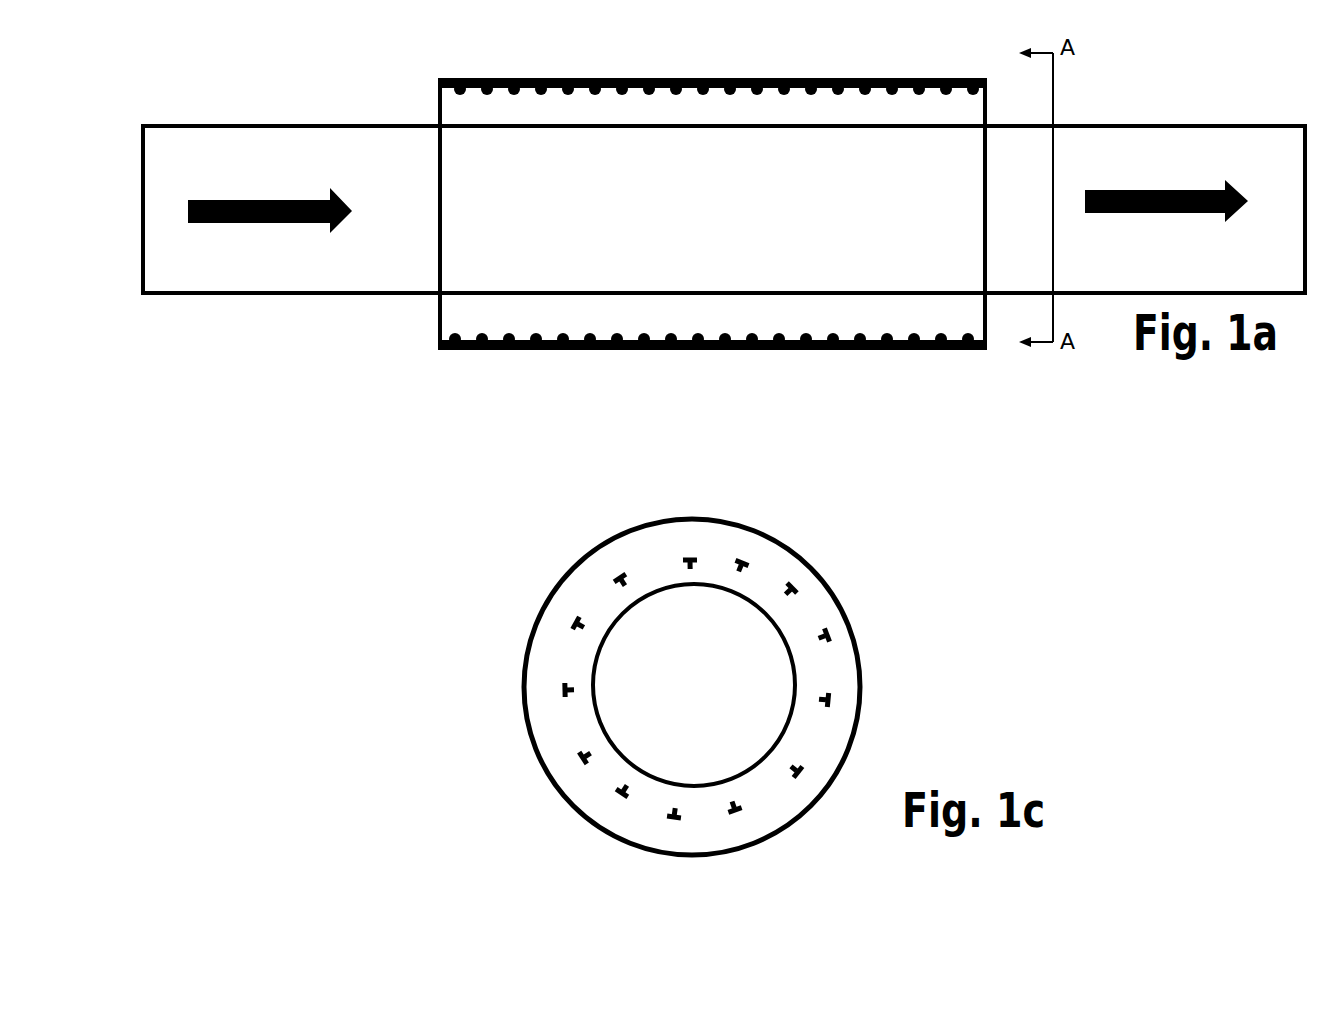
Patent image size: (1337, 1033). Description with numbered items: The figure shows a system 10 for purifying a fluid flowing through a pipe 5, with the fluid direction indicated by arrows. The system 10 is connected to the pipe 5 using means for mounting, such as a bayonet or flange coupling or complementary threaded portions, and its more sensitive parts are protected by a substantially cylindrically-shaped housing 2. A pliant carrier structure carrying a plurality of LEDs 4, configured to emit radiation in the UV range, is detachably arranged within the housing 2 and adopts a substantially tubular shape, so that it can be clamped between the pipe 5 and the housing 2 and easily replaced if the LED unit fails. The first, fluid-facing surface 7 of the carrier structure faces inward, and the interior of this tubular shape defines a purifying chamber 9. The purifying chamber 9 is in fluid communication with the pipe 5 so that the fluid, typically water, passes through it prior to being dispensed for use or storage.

In FIG. 1A, the housing 2 is at (873, 350).
In FIG. 1C, the LEDs 4 is at (572, 622).
In FIG. 1A, the pipe 5 is at (255, 293).
In FIG. 1C, the fluid-facing surface 7 is at (797, 662).
In FIG. 1C, the purifying chamber 9 is at (683, 660).
In FIG. 1A, the system 10 is at (512, 356).
In FIG. 1C, the system 10 is at (525, 728).